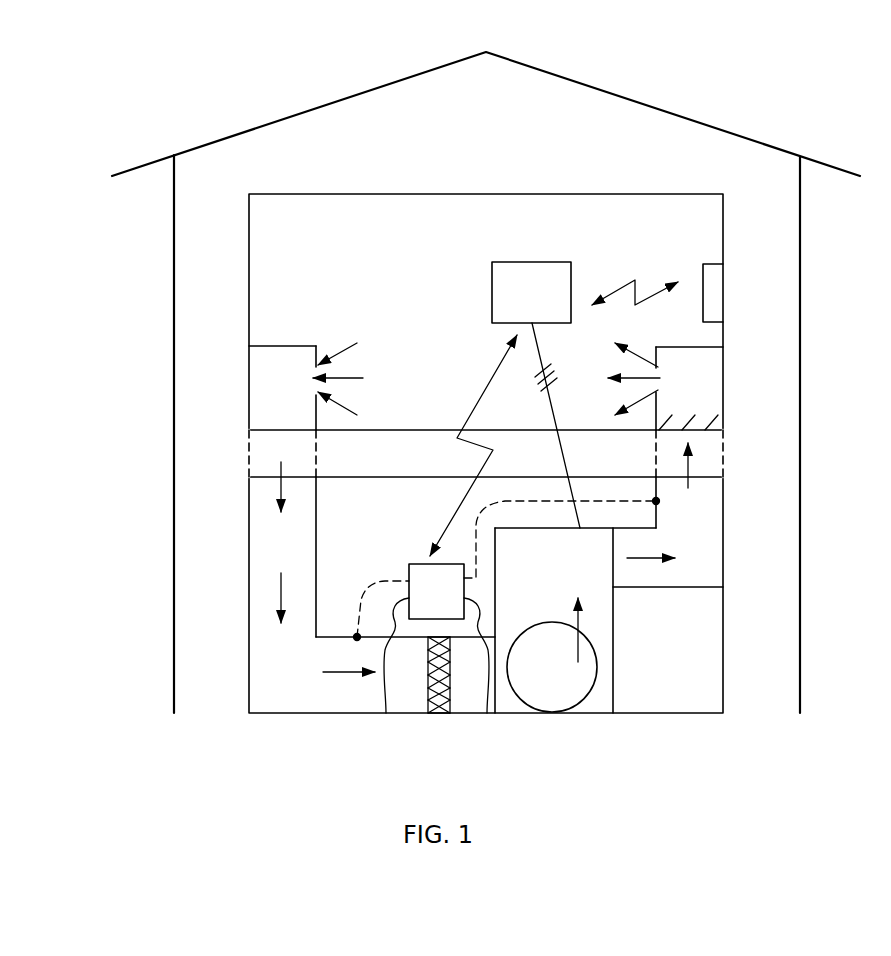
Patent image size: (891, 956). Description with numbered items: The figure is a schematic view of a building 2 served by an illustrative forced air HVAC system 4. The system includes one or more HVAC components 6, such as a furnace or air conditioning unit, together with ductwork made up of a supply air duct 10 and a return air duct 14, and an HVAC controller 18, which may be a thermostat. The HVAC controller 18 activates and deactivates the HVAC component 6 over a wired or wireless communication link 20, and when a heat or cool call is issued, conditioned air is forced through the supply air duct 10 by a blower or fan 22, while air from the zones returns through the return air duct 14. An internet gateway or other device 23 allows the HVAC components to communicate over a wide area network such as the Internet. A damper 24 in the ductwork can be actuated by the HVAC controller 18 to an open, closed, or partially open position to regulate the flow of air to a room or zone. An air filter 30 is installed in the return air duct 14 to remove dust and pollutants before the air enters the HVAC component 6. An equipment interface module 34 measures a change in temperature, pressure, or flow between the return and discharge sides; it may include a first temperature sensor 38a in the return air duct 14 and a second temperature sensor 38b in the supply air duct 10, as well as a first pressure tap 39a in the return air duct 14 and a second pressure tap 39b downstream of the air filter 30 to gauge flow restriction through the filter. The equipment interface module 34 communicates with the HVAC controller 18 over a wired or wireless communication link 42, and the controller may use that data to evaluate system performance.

The building 2 is at (673, 112).
The HVAC system 4 is at (690, 677).
The HVAC component 6 is at (614, 652).
The supply air duct 10 is at (683, 547).
The return air duct 14 is at (274, 548).
The HVAC controller 18 is at (552, 262).
The communication link 20 is at (548, 407).
The blower or fan 22 is at (590, 700).
The internet gateway 23 is at (714, 291).
The damper 24 is at (723, 424).
The air filter 30 is at (437, 713).
The equipment interface module 34 is at (420, 562).
The first temperature sensor 38a is at (357, 637).
The second temperature sensor 38b is at (656, 501).
The first pressure tap 39a is at (386, 713).
The second pressure tap 39b is at (487, 713).
The communication link 42 is at (490, 385).